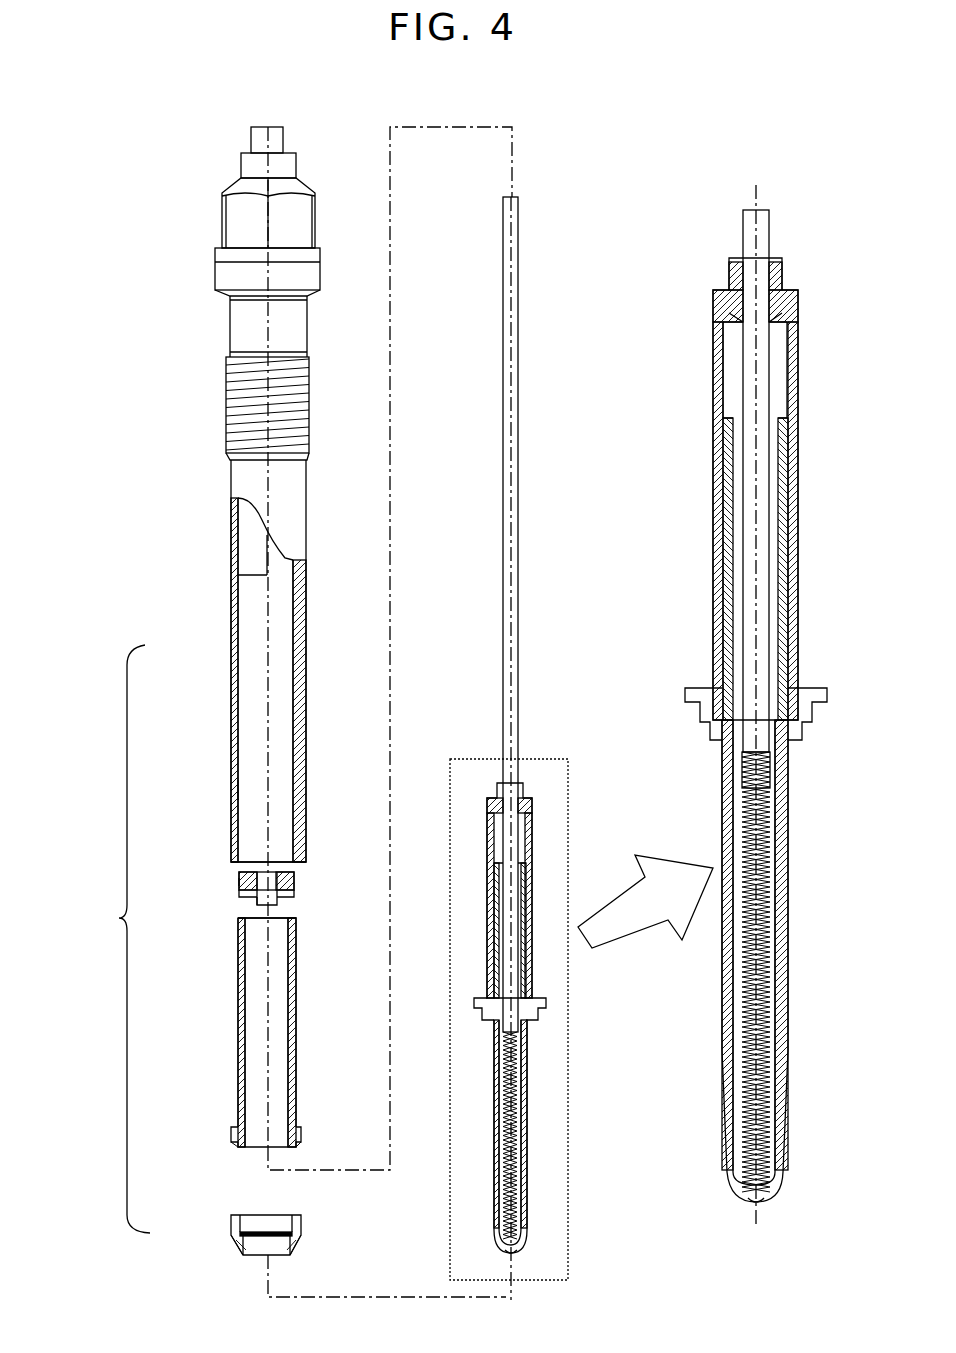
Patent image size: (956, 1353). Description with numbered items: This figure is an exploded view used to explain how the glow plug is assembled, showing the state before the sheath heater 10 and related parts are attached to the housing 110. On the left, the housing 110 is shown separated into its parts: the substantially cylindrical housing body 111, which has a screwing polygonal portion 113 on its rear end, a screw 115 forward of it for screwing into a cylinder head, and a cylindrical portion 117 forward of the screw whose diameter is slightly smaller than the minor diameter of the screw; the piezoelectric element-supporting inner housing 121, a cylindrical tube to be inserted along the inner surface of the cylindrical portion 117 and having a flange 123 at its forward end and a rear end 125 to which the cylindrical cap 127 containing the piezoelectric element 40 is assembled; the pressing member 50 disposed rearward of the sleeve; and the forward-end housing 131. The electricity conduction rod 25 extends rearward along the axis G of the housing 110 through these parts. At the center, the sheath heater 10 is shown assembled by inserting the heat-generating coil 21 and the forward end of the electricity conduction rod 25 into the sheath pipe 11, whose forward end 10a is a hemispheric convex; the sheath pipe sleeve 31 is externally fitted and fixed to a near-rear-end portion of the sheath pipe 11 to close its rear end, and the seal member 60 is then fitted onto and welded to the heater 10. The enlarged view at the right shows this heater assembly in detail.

The sheath heater 10 is at (592, 847).
The forward end of sheath pipe 10a is at (511, 1255).
The sheath pipe 11 is at (527, 1118).
The heat-generating coil 21 is at (512, 1185).
The electricity conduction rod 25 is at (503, 650).
The sheath pipe sleeve 31 is at (532, 838).
The piezoelectric element 40 is at (294, 880).
The pressing member 50 is at (257, 900).
The seal member 60 is at (550, 1001).
The housing 110 is at (215, 691).
The housing body 111 is at (231, 700).
The screwing polygonal portion 113 is at (222, 222).
The screw 115 is at (226, 395).
The cylindrical portion 117 is at (236, 786).
The piezoelectric element-supporting inner housing 121 is at (238, 990).
The flange 123 is at (231, 1132).
The rear end of element-supporting inner housing 125 is at (296, 918).
The cylindrical cap 127 is at (239, 878).
The forward-end housing 131 is at (229, 1220).
The axis G is at (238, 563).